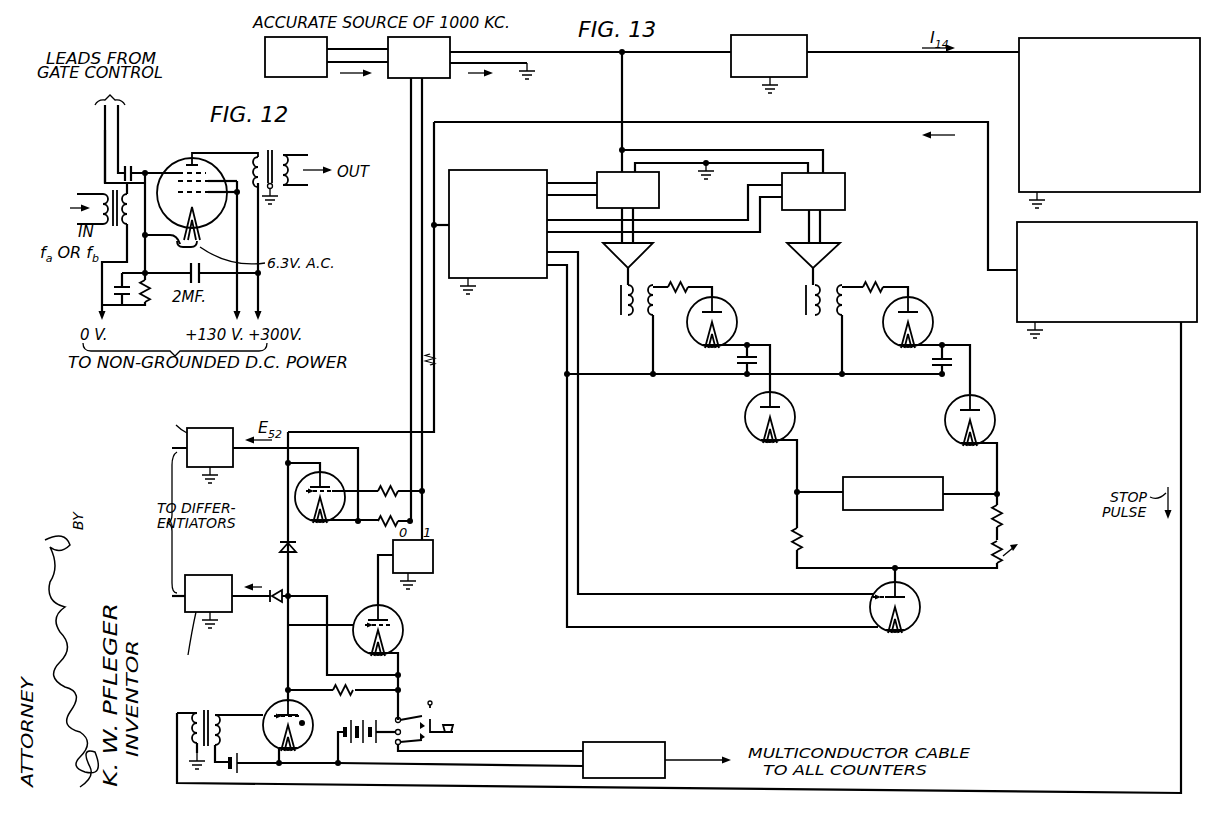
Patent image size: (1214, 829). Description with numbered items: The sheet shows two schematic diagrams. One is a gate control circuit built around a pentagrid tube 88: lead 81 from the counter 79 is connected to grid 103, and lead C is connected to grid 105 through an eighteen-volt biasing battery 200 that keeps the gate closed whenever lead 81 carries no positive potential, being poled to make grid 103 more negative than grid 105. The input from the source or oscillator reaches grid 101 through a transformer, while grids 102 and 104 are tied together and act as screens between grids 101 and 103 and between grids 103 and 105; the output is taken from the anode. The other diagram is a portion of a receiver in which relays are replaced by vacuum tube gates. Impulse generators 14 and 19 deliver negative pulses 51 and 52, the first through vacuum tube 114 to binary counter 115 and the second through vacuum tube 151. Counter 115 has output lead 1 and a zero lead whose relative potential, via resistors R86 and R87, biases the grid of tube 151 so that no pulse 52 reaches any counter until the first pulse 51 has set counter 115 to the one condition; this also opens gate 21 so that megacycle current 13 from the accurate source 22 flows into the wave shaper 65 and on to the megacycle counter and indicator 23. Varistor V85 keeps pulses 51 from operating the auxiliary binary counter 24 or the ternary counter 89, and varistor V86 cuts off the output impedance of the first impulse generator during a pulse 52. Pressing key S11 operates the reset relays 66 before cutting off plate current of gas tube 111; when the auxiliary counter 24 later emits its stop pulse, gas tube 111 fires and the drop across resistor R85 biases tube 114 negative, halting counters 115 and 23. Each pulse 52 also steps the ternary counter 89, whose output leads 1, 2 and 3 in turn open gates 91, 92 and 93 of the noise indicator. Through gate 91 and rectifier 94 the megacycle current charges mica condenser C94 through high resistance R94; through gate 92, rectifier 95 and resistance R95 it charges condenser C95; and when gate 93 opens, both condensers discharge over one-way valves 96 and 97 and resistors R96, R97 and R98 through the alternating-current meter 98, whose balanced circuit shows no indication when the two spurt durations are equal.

In FIG. 12, the counter 79 is at (95, 130).
In FIG. 12, the lead 81 is at (103, 148).
In FIG. 12, the biasing battery 200 is at (120, 122).
In FIG. 12, the pentagrid tube 88 is at (185, 160).
In FIG. 12, the grid 104 is at (180, 171).
In FIG. 12, the grid 103 is at (210, 182).
In FIG. 12, the grid 101 is at (210, 194).
In FIG. 12, the grid 105 is at (205, 157).
In FIG. 12, the grid 102 is at (184, 230).
In FIG. 13, the accurate 1000 kc source 22 is at (327, 41).
In FIG. 13, the gate 21 is at (450, 42).
In FIG. 13, the megacycle current 13 is at (480, 84).
In FIG. 13, the negative voltage pulse 52 is at (938, 148).
In FIG. 13, the wave shaper 65 is at (800, 77).
In FIG. 13, the megacycle counter and indicator 23 is at (1118, 192).
In FIG. 13, the auxiliary binary counter 24 is at (1095, 322).
In FIG. 13, the ternary counter 89 is at (514, 170).
In FIG. 13, the output lead 1 is at (572, 183).
In FIG. 13, the counter output 2 is at (574, 221).
In FIG. 13, the counter output 3 is at (579, 270).
In FIG. 13, the gate 91 is at (659, 190).
In FIG. 13, the gate 92 is at (845, 192).
In FIG. 13, the high resistance R94 is at (676, 284).
In FIG. 13, the resistance R95 is at (871, 284).
In FIG. 13, the diode rectifier 94 is at (725, 303).
In FIG. 13, the diode rectifier 95 is at (921, 303).
In FIG. 13, the mica condenser C94 is at (760, 359).
In FIG. 13, the mica condenser C95 is at (955, 361).
In FIG. 13, the one-way valve 96 is at (745, 410).
In FIG. 13, the one-way valve 97 is at (996, 415).
In FIG. 13, the resistor R96 is at (801, 537).
In FIG. 13, the resistor R97 is at (1004, 516).
In FIG. 13, the resistor R98 is at (1006, 553).
In FIG. 13, the alternating-current meter 98 is at (905, 477).
In FIG. 13, the gate 93 is at (921, 603).
In FIG. 13, the impulse generator 19 is at (227, 457).
In FIG. 13, the vacuum tube 151 is at (300, 520).
In FIG. 13, the resistor R87 is at (384, 487).
In FIG. 13, the resistor R86 is at (382, 526).
In FIG. 13, the varistor V85 is at (292, 555).
In FIG. 13, the varistor V86 is at (271, 604).
In FIG. 13, the negative voltage pulse 51 is at (256, 579).
In FIG. 13, the impulse generator 14 is at (222, 575).
In FIG. 13, the binary counter 115 is at (433, 553).
In FIG. 13, the vacuum tube 114 is at (403, 628).
In FIG. 13, the resistor R85 is at (344, 694).
In FIG. 13, the gas tube 111 is at (298, 741).
In FIG. 13, the key S11 is at (441, 718).
In FIG. 13, the reset relays 66 is at (648, 742).